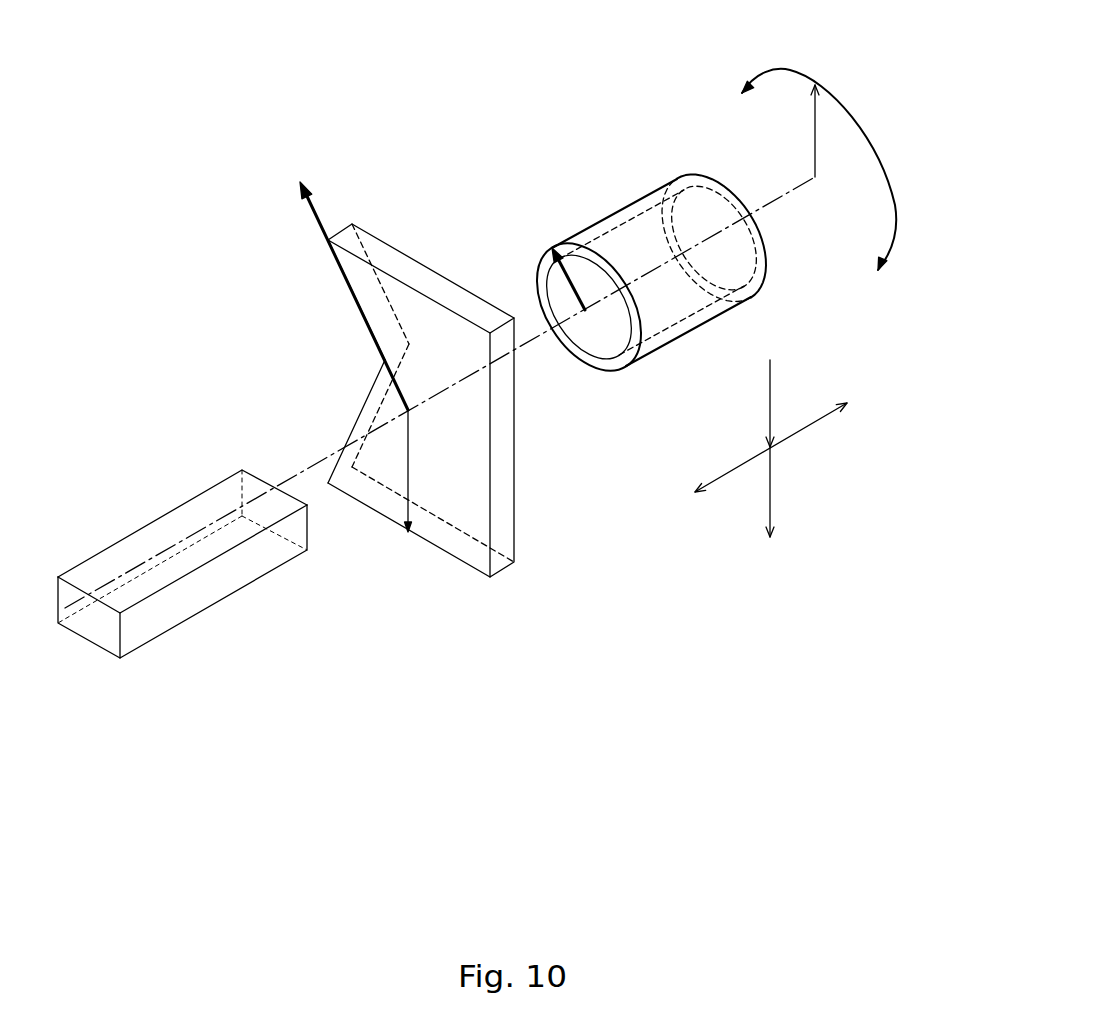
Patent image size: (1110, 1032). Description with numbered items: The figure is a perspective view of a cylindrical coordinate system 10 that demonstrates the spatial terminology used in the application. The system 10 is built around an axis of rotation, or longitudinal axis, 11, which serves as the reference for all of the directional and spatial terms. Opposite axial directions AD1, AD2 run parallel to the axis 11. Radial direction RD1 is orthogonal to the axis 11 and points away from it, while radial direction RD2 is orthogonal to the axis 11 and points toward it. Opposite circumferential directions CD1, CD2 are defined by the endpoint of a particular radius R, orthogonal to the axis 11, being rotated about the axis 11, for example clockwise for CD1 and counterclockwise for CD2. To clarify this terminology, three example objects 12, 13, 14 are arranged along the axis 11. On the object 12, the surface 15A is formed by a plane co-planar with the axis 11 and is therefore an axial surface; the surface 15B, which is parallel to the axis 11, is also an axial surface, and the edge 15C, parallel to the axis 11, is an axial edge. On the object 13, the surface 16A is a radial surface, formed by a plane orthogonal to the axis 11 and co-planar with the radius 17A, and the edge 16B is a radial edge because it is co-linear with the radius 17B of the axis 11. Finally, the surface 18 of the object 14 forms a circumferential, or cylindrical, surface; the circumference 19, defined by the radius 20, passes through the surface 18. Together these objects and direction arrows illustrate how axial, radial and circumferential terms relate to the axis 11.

The cylindrical coordinate system 10 is at (272, 308).
The axis of rotation 11 is at (752, 214).
The object 12 is at (154, 652).
The object 13 is at (528, 569).
The object 14 is at (686, 346).
The axial surface 15A is at (147, 543).
The axial surface 15B is at (200, 600).
The axial edge 15C is at (174, 510).
The radial surface 16A is at (413, 310).
The radial edge 16B is at (358, 300).
The radius 17A is at (408, 463).
The radius 17B is at (317, 217).
The circumferential surface 18 is at (622, 207).
The circumference 19 is at (540, 273).
The radius 20 is at (538, 300).
The radius R is at (815, 125).
The circumferential direction CD1 is at (898, 232).
The circumferential direction CD2 is at (772, 68).
The radial direction RD1 is at (772, 502).
The radial direction RD2 is at (772, 380).
The axial direction AD1 is at (802, 427).
The axial direction AD2 is at (730, 467).